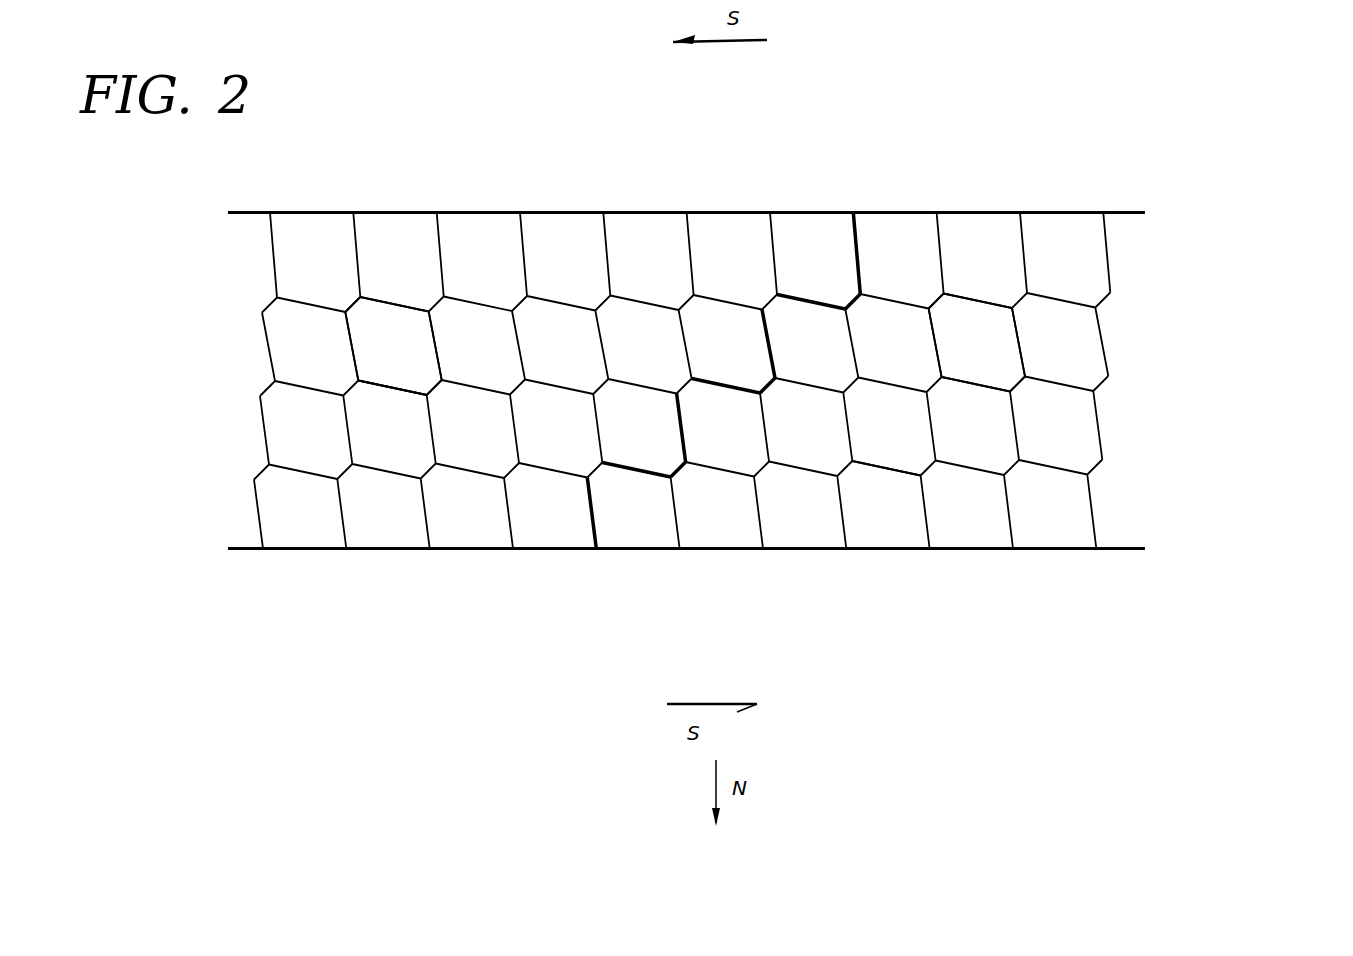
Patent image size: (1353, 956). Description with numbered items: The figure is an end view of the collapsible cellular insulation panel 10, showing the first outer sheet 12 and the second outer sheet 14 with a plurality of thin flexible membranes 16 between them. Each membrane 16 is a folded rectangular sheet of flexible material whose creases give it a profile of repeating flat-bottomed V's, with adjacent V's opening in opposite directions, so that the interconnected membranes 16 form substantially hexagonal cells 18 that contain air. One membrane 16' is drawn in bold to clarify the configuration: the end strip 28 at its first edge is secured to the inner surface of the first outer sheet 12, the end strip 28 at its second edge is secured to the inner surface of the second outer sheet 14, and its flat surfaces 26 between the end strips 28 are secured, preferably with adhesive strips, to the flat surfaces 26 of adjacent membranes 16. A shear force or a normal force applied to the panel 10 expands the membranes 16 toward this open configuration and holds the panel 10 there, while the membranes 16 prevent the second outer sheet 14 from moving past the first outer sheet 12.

The panel 10 is at (1172, 380).
The first outer sheet 12 is at (575, 211).
The second outer sheet 14 is at (652, 549).
The membrane 16 is at (664, 512).
The membrane 16' is at (811, 210).
The cell 18 is at (390, 340).
The flat bottom 26 is at (771, 294).
The end strip 28 is at (858, 212).